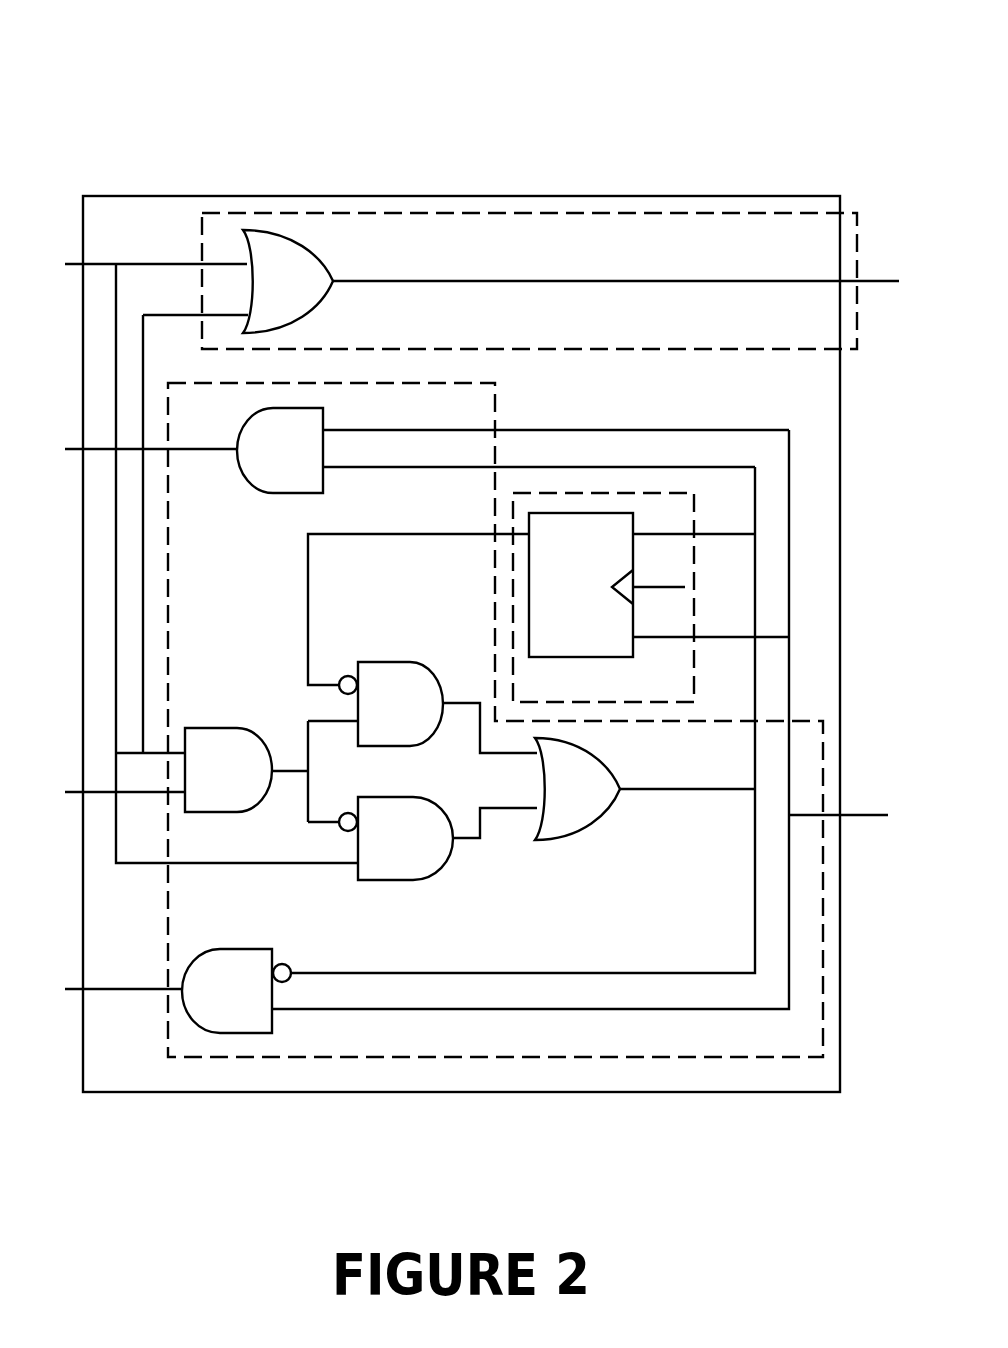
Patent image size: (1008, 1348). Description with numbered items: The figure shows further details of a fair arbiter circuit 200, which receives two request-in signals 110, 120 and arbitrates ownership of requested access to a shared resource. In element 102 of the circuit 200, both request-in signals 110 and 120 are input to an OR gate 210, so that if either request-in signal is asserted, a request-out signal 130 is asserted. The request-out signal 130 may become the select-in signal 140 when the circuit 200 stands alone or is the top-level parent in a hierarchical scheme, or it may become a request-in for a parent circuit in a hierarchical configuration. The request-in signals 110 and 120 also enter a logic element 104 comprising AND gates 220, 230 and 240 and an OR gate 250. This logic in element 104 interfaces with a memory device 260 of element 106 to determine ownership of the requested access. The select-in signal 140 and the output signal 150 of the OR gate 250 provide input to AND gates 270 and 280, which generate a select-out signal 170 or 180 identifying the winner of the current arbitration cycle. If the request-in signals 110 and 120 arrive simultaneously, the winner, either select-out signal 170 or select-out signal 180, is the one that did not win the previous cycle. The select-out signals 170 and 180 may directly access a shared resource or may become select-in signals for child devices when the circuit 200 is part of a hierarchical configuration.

The fair arbiter circuit 200 is at (137, 27).
The element 102 is at (546, 252).
The logic element 104 is at (620, 952).
The element 106 is at (600, 697).
The request-in signal 110 is at (191, 557).
The request-in signal 120 is at (106, 794).
The request-out signal 130 is at (620, 270).
The select-in signal 140 is at (838, 804).
The output signal 150 is at (712, 789).
The select-out signal 170 is at (131, 447).
The select-out signal 180 is at (103, 987).
The OR gate 210 is at (307, 294).
The AND gate 220 is at (247, 782).
The AND gate 230 is at (421, 714).
The AND gate 240 is at (425, 851).
The OR gate 250 is at (600, 799).
The memory device 260 is at (600, 597).
The AND gate 270 is at (302, 460).
The AND gate 280 is at (249, 1001).